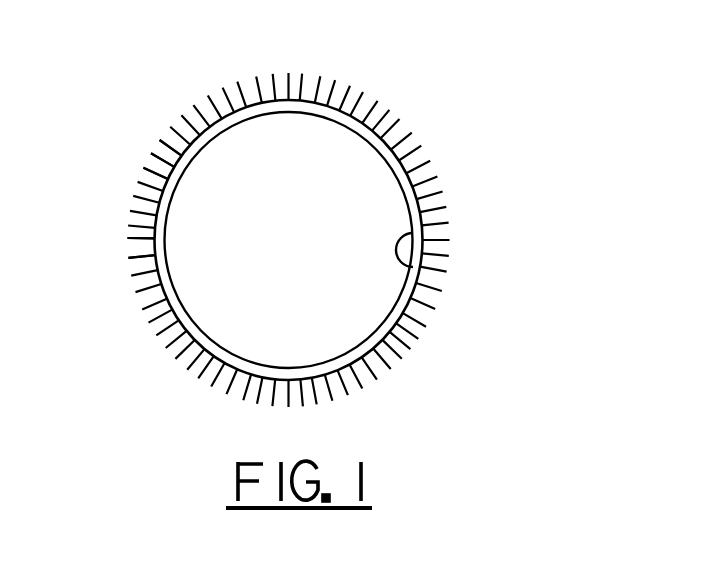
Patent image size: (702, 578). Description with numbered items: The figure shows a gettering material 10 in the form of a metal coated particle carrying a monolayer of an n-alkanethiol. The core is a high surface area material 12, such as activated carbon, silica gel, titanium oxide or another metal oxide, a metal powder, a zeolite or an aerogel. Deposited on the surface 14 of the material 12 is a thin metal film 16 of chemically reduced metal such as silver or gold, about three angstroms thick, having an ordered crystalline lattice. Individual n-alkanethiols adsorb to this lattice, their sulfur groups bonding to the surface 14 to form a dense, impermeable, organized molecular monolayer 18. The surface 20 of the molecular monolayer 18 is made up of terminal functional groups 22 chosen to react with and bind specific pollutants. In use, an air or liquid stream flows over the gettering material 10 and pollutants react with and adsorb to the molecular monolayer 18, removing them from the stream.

The gettering material 10 is at (295, 214).
The high surface area material 12 is at (412, 267).
The surface 14 is at (405, 195).
The thin metal film 16 is at (396, 320).
The organized molecular monolayer 18 is at (204, 112).
The surface of molecular monolayer 20 is at (145, 162).
The terminal functional groups 22 is at (132, 255).